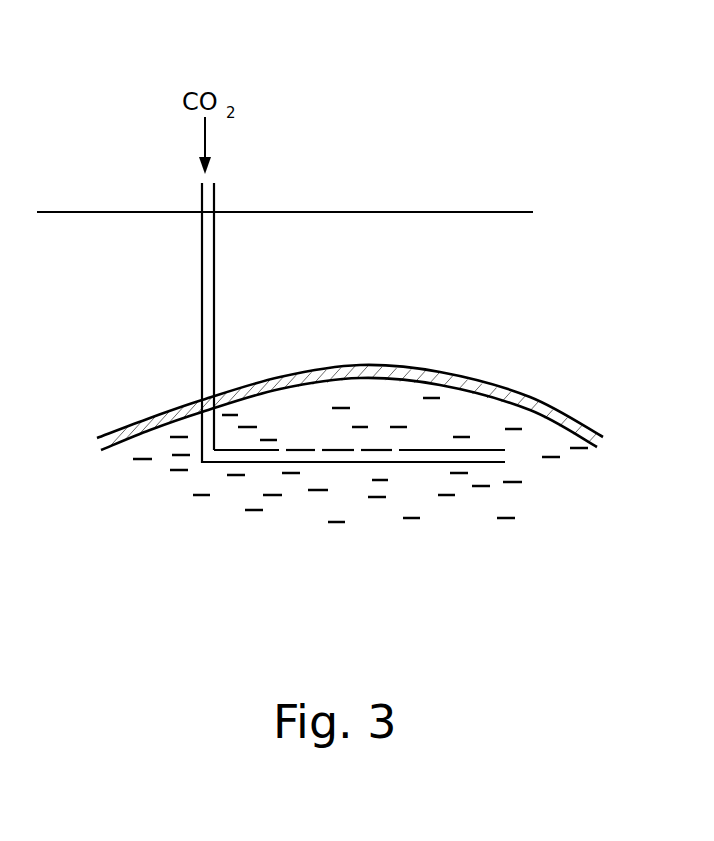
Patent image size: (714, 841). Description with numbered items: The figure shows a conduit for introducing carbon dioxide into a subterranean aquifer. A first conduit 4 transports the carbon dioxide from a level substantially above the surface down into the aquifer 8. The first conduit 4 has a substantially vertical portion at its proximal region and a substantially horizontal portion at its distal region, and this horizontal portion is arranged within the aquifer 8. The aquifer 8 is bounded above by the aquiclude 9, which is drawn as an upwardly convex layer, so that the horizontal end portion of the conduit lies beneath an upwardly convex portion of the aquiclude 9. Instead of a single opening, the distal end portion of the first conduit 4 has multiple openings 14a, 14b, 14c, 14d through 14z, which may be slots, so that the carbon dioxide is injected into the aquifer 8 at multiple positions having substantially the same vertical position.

The first conduit 4 is at (215, 255).
The aquiclude 9 is at (530, 397).
The opening 14a is at (282, 449).
The opening 14b is at (318, 449).
The opening 14c is at (357, 449).
The opening 14d is at (395, 449).
The opening 14z is at (508, 457).
The aquifer 8 is at (377, 535).